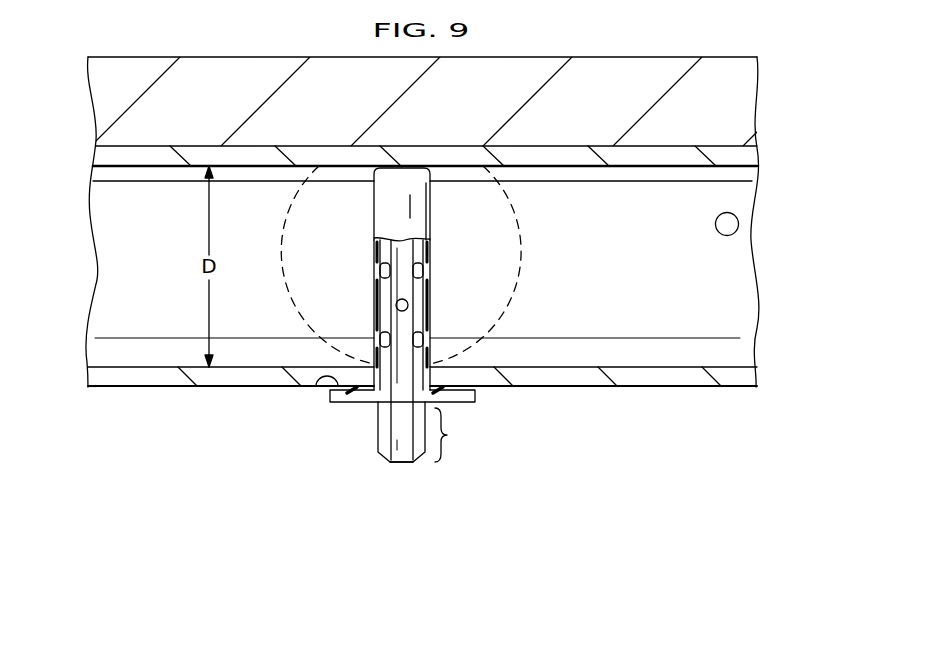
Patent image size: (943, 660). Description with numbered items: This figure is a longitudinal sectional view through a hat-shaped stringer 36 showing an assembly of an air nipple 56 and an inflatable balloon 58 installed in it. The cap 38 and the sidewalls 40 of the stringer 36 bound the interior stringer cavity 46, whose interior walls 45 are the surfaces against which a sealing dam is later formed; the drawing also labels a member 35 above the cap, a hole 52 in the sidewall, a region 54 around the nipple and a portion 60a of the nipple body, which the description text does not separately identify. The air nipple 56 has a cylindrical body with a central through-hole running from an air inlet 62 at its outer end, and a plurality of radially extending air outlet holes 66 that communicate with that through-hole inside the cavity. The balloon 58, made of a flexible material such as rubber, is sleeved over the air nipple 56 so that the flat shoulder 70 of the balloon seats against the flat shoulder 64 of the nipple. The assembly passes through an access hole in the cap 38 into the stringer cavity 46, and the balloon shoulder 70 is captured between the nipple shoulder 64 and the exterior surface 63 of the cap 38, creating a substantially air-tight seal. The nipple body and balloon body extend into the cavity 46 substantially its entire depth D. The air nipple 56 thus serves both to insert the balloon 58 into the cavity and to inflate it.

The upper skin / face sheet 35 is at (137, 62).
The interior walls 45 is at (105, 270).
The exterior surface of the cap 63 is at (162, 388).
The cap 38 is at (660, 380).
The stringer 36 is at (555, 410).
The sidewalls 40 is at (572, 267).
The stringer cavity 46 is at (729, 302).
The hole 52 is at (732, 235).
The insert 54 is at (370, 240).
The inflatable balloon 58 is at (412, 180).
The air outlet holes 66 is at (380, 275).
The shoulder of the air nipple 64 is at (332, 403).
The shoulder of the balloon 70 is at (316, 386).
The air nipple 56 is at (376, 430).
The threaded portion 60a is at (460, 435).
The air inlet 62 is at (394, 470).